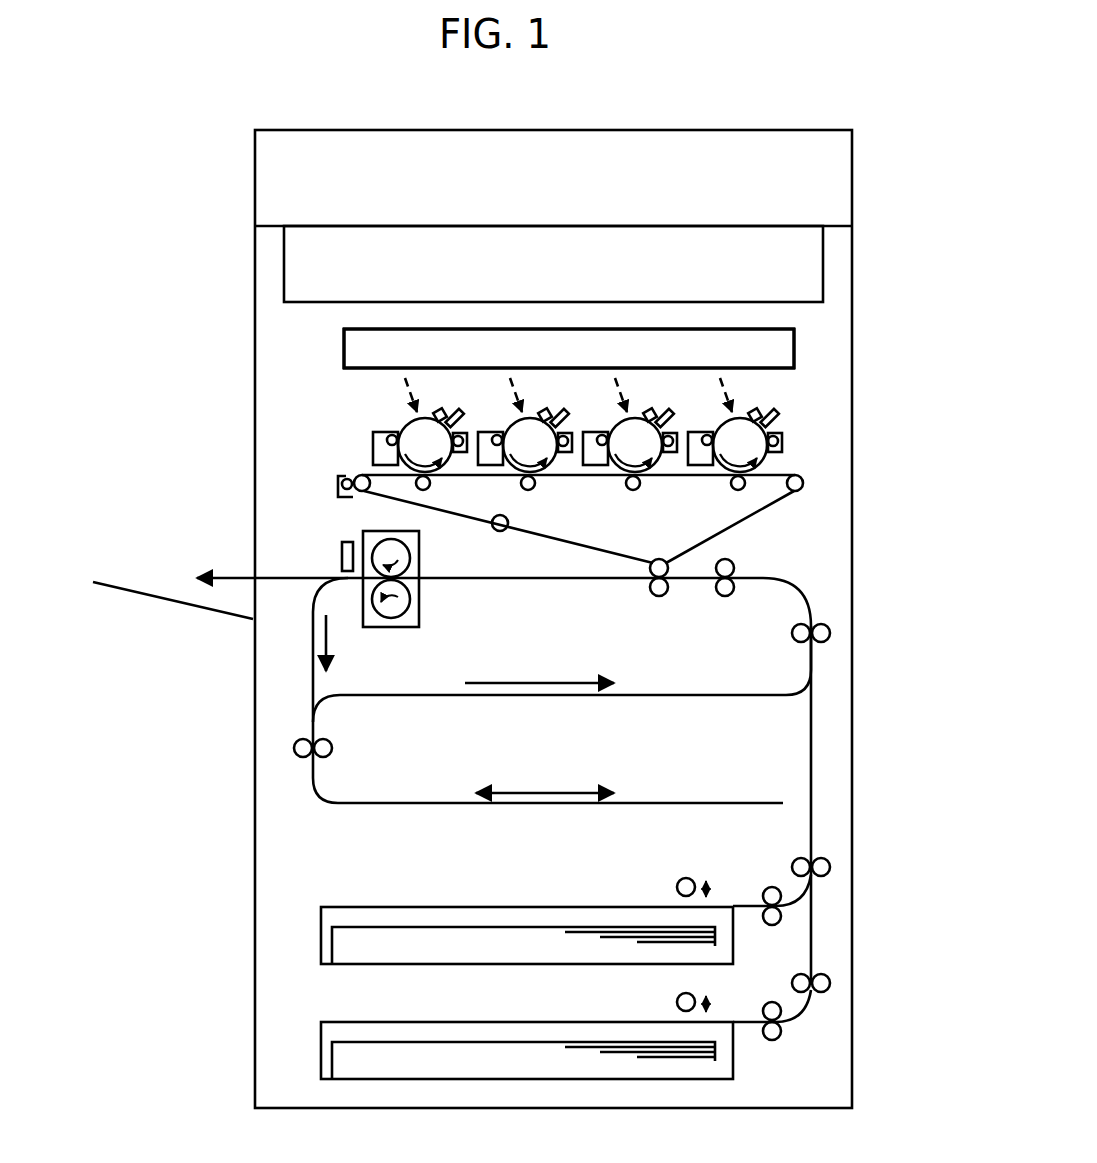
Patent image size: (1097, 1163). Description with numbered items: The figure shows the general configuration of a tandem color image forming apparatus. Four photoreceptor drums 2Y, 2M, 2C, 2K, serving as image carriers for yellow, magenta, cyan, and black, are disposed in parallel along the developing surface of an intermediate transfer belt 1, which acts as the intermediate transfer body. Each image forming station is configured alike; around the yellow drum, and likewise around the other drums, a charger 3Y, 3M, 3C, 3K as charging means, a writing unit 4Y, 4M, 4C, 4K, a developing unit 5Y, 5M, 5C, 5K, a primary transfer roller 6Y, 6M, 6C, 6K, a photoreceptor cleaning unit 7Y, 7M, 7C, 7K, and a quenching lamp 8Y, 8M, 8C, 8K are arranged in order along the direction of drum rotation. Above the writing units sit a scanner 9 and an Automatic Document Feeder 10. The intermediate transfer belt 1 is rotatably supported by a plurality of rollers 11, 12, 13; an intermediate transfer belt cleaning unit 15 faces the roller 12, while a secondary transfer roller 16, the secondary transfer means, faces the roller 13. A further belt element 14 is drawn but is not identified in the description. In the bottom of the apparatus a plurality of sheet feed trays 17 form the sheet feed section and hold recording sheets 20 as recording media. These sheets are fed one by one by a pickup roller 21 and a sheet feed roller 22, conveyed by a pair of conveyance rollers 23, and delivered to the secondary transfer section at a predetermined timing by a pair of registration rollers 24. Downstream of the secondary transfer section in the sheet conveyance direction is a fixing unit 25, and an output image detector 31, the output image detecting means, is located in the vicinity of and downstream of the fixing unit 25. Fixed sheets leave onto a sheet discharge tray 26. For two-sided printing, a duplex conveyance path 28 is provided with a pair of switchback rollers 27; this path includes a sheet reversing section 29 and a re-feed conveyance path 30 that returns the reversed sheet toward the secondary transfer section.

The intermediate transfer belt 1 is at (780, 501).
The photoreceptor drum 2Y is at (413, 450).
The photoreceptor drum 2M is at (517, 450).
The photoreceptor drum 2C is at (623, 450).
The photoreceptor drum 2K is at (728, 450).
The charger 3Y is at (439, 409).
The charger 3M is at (544, 409).
The charger 3C is at (649, 409).
The charger 3K is at (754, 409).
The writing unit 4Y is at (568, 328).
The writing unit 4M is at (569, 348).
The writing unit 4C is at (569, 348).
The writing unit 4K is at (569, 348).
The developing unit 5Y is at (390, 432).
The developing unit 5M is at (495, 432).
The developing unit 5C is at (600, 432).
The developing unit 5K is at (705, 432).
The primary transfer roller 6Y is at (418, 491).
The primary transfer roller 6M is at (521, 488).
The primary transfer roller 6C is at (633, 491).
The primary transfer roller 6K is at (735, 491).
The photoreceptor cleaning unit 7Y is at (462, 453).
The photoreceptor cleaning unit 7M is at (567, 453).
The photoreceptor cleaning unit 7C is at (672, 453).
The photoreceptor cleaning unit 7K is at (784, 446).
The quenching lamp 8Y is at (456, 413).
The quenching lamp 8M is at (561, 413).
The quenching lamp 8C is at (666, 413).
The quenching lamp 8K is at (771, 413).
The scanner 9 is at (823, 260).
The Automatic Document Feeder 10 is at (852, 173).
The roller 11 is at (807, 484).
The roller 12 is at (351, 476).
The roller 13 is at (661, 559).
The tension roller 14 is at (508, 523).
The intermediate transfer belt cleaning unit 15 is at (338, 483).
The secondary transfer roller 16 is at (659, 597).
The sheet feed tray 17 is at (458, 906).
The recording sheets 20 is at (590, 930).
The pickup roller 21 is at (677, 887).
The sheet feed roller 22 is at (770, 887).
The pair of conveyance rollers 23 is at (820, 624).
The pair of registration rollers 24 is at (733, 565).
The fixing unit 25 is at (420, 604).
The sheet discharge tray 26 is at (139, 591).
The pair of switchback rollers 27 is at (334, 748).
The duplex conveyance path 28 is at (283, 712).
The sheet reversing section 29 is at (722, 803).
The re-feed conveyance path 30 is at (720, 694).
The output image detector 31 is at (342, 556).